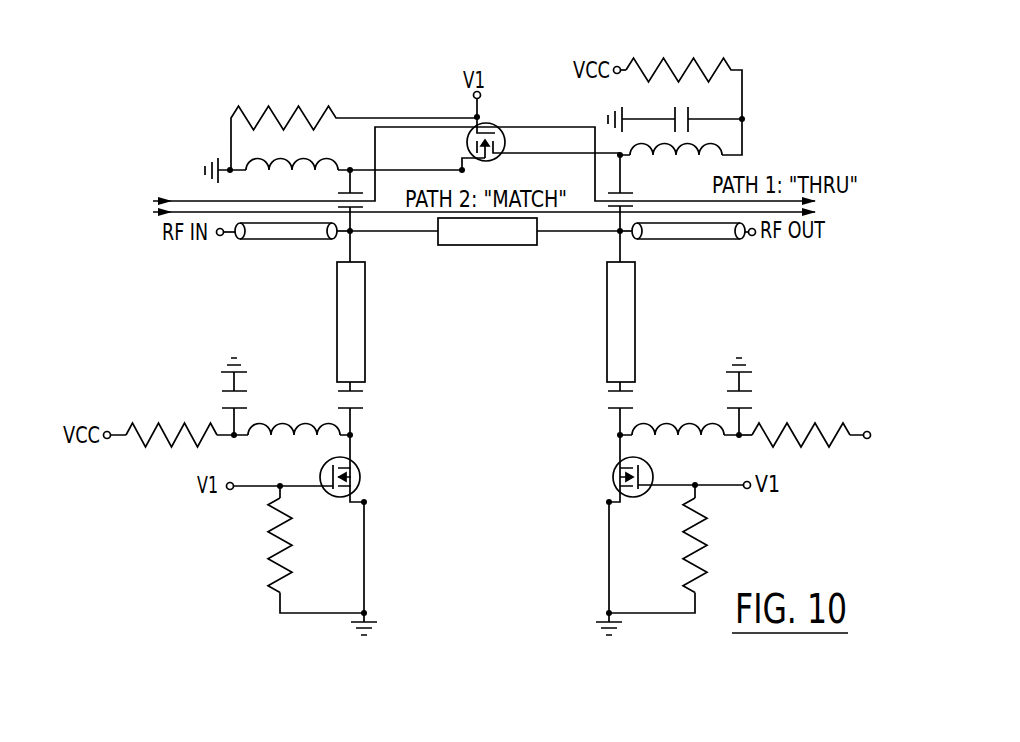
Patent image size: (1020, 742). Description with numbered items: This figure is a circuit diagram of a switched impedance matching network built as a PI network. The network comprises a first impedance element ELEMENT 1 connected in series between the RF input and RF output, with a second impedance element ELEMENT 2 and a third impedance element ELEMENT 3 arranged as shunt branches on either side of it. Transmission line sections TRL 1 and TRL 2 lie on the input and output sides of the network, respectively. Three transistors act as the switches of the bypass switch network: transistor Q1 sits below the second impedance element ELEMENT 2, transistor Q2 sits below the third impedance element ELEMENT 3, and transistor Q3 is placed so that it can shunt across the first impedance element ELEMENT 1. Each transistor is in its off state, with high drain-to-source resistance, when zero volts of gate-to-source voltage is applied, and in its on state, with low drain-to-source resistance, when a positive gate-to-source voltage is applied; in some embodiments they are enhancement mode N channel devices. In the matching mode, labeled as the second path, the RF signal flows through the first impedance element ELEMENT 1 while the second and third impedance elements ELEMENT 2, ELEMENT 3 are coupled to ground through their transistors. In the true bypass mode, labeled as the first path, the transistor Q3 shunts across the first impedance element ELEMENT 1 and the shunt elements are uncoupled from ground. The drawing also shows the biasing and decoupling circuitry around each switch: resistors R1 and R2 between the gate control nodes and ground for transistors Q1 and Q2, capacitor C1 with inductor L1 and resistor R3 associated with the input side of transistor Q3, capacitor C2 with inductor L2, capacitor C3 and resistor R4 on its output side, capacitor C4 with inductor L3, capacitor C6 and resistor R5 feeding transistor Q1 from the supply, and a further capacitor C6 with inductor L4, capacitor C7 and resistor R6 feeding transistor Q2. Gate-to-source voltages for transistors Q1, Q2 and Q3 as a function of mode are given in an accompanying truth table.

The resistor R1 is at (267, 545).
The resistor R2 is at (682, 545).
The resistor R3 is at (354, 125).
The resistor R4 is at (684, 75).
The resistor R5 is at (171, 421).
The resistor R6 is at (794, 421).
The capacitor C1 is at (338, 200).
The capacitor C2 is at (628, 193).
The capacitor C3 is at (706, 106).
The capacitor C4 is at (364, 404).
The capacitor C6 is at (441, 413).
The capacitor C7 is at (753, 412).
The inductor L1 is at (292, 179).
The inductor L2 is at (676, 163).
The inductor L3 is at (294, 445).
The inductor L4 is at (678, 444).
The transistor Q1 is at (342, 482).
The transistor Q2 is at (631, 481).
The transistor Q3 is at (543, 131).
The transmission line TRL 1 is at (292, 245).
The transmission line TRL 2 is at (682, 244).
The first impedance element ELEMENT 1 is at (487, 231).
The second impedance element ELEMENT 2 is at (351, 322).
The third impedance element ELEMENT 3 is at (621, 322).